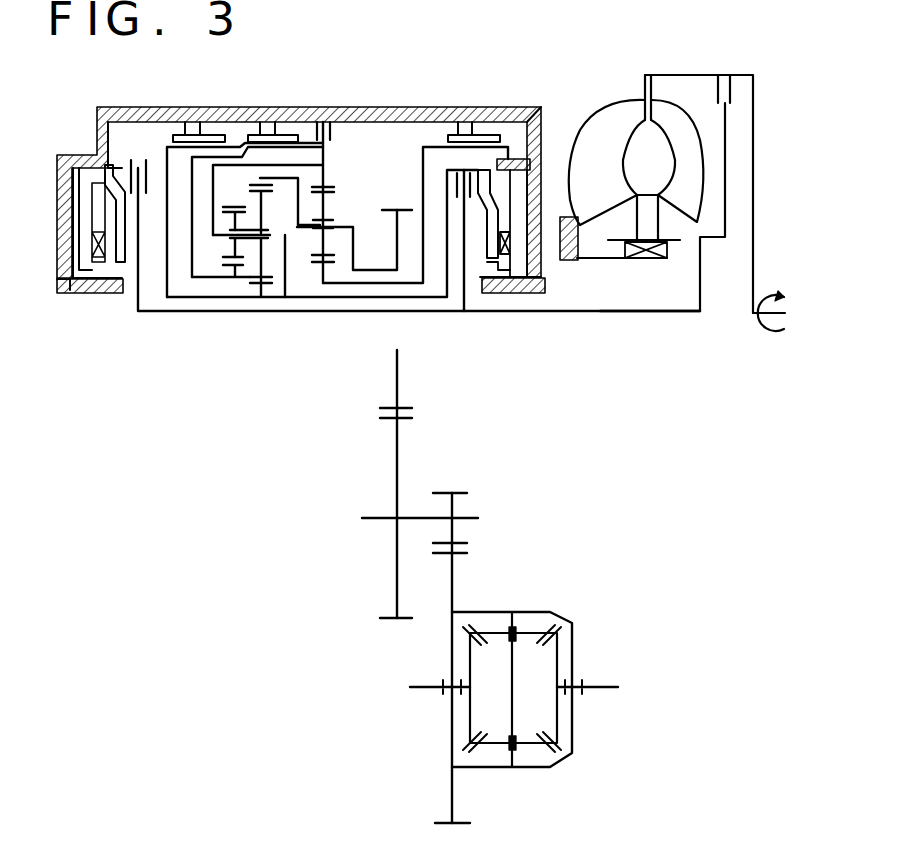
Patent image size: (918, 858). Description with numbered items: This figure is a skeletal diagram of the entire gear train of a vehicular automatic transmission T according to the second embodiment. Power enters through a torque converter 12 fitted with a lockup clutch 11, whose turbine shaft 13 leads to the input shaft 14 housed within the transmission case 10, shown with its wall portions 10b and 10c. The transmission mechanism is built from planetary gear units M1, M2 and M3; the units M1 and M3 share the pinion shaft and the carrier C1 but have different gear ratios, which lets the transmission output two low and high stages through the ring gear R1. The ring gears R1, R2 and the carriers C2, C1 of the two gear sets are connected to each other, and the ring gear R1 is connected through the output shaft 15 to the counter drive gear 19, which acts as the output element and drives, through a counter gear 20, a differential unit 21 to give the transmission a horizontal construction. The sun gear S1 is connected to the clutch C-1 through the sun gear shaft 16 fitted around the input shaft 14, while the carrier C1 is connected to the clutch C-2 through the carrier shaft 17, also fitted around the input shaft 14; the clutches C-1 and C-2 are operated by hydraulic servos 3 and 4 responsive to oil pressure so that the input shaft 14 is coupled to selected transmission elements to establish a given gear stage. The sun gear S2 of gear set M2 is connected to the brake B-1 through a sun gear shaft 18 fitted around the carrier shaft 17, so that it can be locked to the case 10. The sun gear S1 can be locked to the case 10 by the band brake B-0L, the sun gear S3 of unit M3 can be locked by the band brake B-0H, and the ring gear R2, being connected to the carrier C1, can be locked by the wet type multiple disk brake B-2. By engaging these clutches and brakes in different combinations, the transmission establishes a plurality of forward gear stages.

The hydraulic servo 3 is at (64, 285).
The hydraulic servo 4 is at (540, 274).
The transmission case 10 is at (100, 138).
The transmission case portion 10b is at (127, 172).
The transmission case portion 10c is at (524, 137).
The lockup clutch 11 is at (735, 90).
The torque converter 12 is at (646, 85).
The turbine shaft 13 is at (636, 313).
The input shaft 14 is at (460, 312).
The output shaft 15 is at (374, 268).
The sun gear shaft 16 is at (170, 302).
The carrier shaft 17 is at (432, 298).
The sun gear shaft 18 is at (392, 300).
The counter drive gear 19 is at (396, 208).
The counter gear 20 is at (429, 480).
The differential unit 21 is at (550, 612).
The automatic transmission T is at (482, 104).
The band brake B-0L is at (180, 122).
The band brake B-0H is at (256, 122).
The band brake B-1 is at (455, 122).
The multiple disk brake B-2 is at (316, 122).
The clutch C-1 is at (150, 157).
The clutch C-2 is at (452, 158).
The ring gear R1 is at (256, 181).
The ring gear R2 is at (334, 184).
The carrier C1 is at (224, 244).
The carrier C2 is at (335, 220).
The sun gear S1 is at (262, 298).
The sun gear S2 is at (330, 295).
The sun gear S3 is at (220, 298).
The planetary gear unit M1 is at (270, 322).
The planetary gear set M2 is at (327, 322).
The planetary gear unit M3 is at (233, 325).